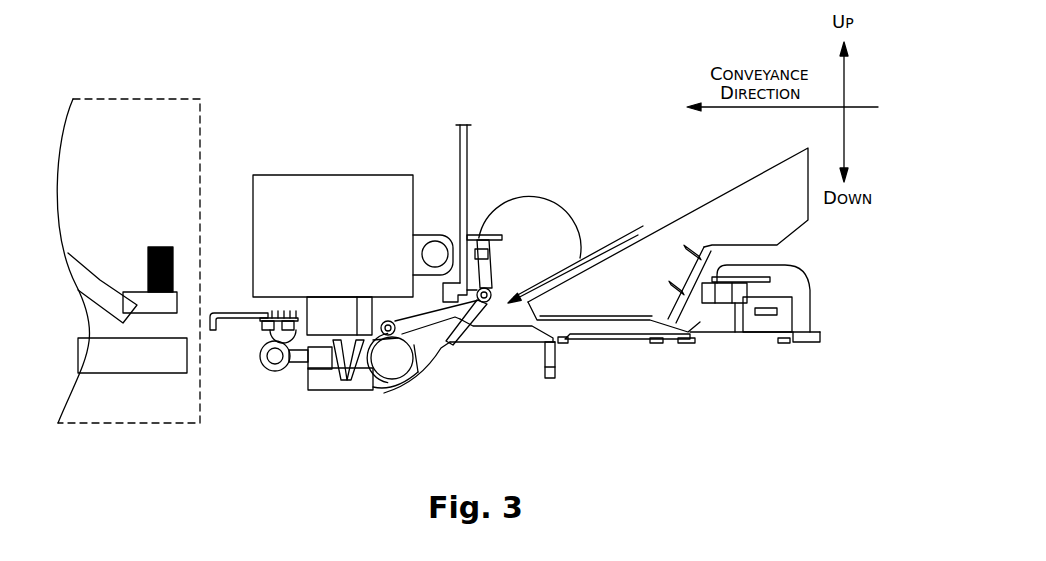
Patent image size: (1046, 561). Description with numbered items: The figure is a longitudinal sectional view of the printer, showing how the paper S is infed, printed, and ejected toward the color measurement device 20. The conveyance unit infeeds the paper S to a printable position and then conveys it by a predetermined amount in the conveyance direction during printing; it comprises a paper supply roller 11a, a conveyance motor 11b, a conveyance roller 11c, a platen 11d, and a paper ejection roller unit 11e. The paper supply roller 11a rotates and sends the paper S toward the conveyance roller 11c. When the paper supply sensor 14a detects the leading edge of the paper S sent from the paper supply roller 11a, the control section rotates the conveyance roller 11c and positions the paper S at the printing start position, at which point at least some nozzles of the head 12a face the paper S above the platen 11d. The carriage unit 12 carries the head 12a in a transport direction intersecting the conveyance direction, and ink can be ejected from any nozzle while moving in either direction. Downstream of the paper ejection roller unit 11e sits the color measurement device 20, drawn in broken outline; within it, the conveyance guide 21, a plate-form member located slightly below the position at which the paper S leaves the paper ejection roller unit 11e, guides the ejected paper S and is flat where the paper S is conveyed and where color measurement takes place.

The paper supply roller 11a is at (542, 205).
The conveyance motor 11b is at (413, 370).
The conveyance roller 11c is at (386, 362).
The platen 11d is at (339, 355).
The paper ejection roller unit 11e is at (259, 378).
The carriage unit 12 is at (344, 160).
The head 12a is at (322, 308).
The paper supply sensor 14a is at (484, 303).
The color measurement device 20 is at (201, 152).
The conveyance guide 21 is at (140, 364).
The paper S is at (584, 257).